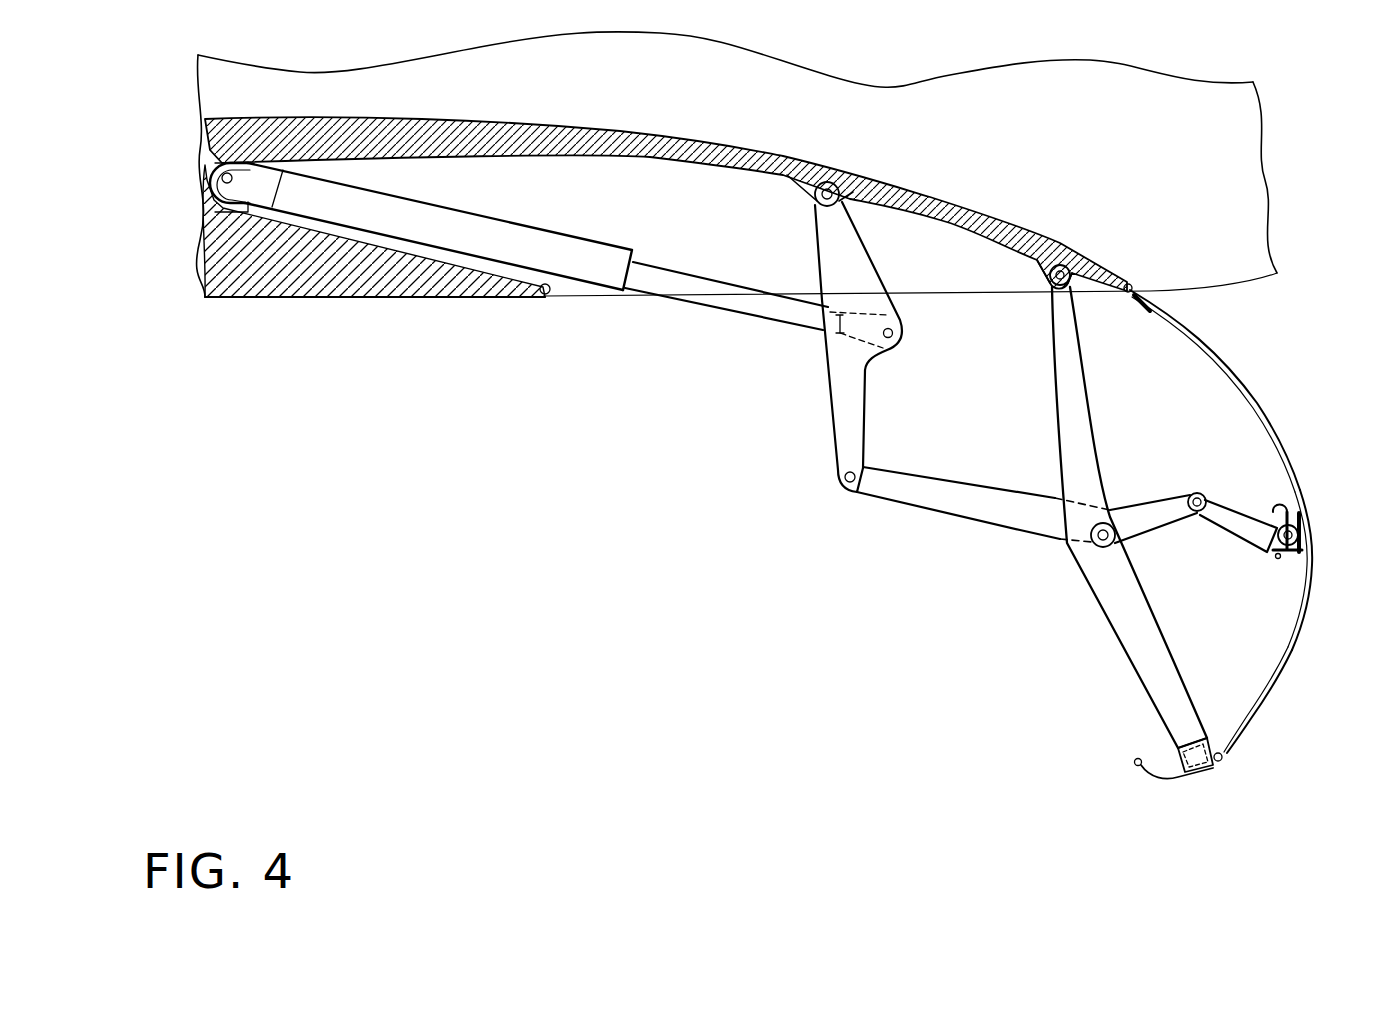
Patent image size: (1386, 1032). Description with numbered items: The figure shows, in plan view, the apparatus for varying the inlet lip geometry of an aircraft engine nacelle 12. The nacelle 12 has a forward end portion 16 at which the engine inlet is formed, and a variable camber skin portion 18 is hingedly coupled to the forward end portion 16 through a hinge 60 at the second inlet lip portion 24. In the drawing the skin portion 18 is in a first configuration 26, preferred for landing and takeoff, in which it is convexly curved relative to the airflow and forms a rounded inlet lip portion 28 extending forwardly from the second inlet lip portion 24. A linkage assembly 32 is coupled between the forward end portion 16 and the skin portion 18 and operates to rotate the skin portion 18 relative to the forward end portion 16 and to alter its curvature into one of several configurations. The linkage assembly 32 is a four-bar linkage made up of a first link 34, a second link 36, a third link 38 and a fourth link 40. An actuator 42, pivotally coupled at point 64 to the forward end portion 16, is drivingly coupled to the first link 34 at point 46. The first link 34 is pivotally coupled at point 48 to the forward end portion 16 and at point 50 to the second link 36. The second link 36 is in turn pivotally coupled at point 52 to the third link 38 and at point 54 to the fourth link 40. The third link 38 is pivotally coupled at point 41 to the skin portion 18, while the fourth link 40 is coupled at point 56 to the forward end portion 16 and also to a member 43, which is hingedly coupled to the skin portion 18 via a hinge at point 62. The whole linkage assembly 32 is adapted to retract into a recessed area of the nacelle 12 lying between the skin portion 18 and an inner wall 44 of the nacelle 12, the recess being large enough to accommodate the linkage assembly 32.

The nacelle 12 is at (202, 263).
The forward end portion 16 is at (393, 118).
The variable camber skin portion 18 is at (1220, 350).
The second inlet lip portion 24 is at (1080, 262).
The first configuration 26 is at (1280, 690).
The rounded inlet lip portion 28 is at (1310, 596).
The linkage assembly 32 is at (969, 621).
The first link 34 is at (840, 373).
The second link 36 is at (957, 492).
The third link 38 is at (1232, 522).
The fourth link 40 is at (1125, 630).
The point 41 is at (1277, 556).
The actuator 42 is at (587, 286).
The member 43 is at (1200, 770).
The inner wall 44 is at (603, 158).
The point 46 is at (912, 316).
The point 48 is at (830, 181).
The point 50 is at (838, 475).
The point 52 is at (1197, 492).
The point 54 is at (1098, 547).
The point 56 is at (1057, 264).
The hinge 60 is at (1133, 283).
The point 62 is at (1230, 753).
The point 64 is at (202, 167).